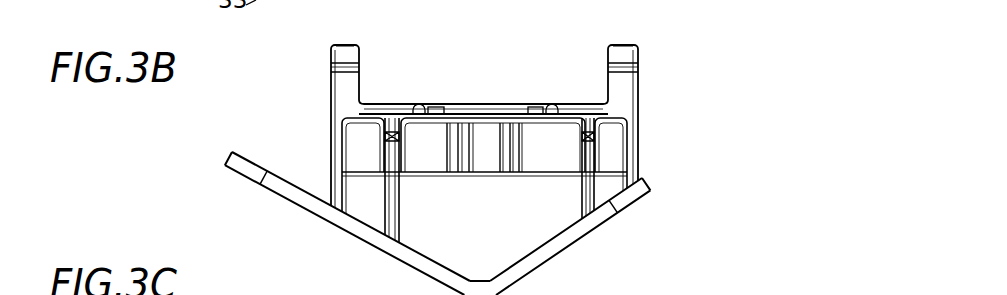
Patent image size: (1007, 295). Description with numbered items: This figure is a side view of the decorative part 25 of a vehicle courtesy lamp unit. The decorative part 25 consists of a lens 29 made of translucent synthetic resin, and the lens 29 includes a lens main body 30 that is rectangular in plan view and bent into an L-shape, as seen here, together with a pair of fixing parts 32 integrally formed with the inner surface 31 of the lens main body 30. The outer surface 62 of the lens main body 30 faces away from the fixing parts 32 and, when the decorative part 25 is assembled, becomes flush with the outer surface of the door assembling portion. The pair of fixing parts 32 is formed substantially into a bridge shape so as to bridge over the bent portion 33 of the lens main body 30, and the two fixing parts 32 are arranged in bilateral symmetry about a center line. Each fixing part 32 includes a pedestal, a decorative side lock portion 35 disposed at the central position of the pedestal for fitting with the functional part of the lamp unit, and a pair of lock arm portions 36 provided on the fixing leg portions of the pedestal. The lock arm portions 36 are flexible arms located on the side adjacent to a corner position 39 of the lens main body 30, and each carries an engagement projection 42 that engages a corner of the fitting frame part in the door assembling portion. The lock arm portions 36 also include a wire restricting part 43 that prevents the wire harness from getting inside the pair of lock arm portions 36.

The decorative part 25 is at (256, 213).
The lens 29 is at (383, 252).
The lens main body 30 is at (546, 263).
The inner surface 31 is at (289, 182).
The fixing part 32 is at (404, 104).
The bent portion 33 is at (480, 290).
The decorative side lock portion 35 is at (500, 104).
The lock arm portion 36 is at (350, 45).
The corner position 39 is at (233, 156).
The engagement projection 42 is at (340, 54).
The wire restricting part 43 is at (332, 90).
The outer surface 62 is at (283, 198).